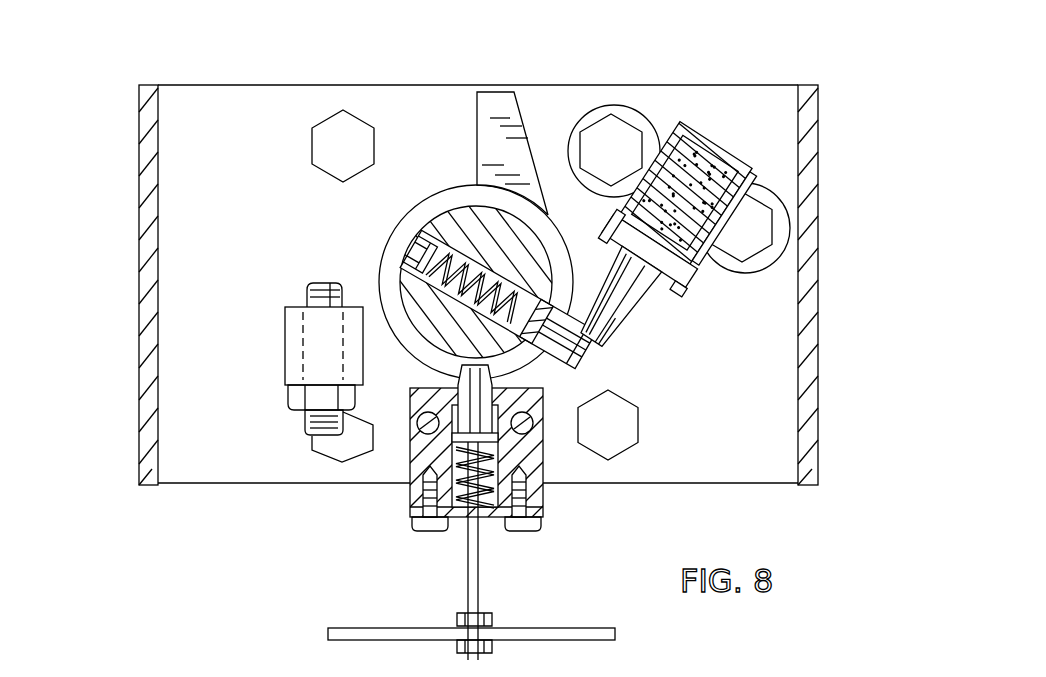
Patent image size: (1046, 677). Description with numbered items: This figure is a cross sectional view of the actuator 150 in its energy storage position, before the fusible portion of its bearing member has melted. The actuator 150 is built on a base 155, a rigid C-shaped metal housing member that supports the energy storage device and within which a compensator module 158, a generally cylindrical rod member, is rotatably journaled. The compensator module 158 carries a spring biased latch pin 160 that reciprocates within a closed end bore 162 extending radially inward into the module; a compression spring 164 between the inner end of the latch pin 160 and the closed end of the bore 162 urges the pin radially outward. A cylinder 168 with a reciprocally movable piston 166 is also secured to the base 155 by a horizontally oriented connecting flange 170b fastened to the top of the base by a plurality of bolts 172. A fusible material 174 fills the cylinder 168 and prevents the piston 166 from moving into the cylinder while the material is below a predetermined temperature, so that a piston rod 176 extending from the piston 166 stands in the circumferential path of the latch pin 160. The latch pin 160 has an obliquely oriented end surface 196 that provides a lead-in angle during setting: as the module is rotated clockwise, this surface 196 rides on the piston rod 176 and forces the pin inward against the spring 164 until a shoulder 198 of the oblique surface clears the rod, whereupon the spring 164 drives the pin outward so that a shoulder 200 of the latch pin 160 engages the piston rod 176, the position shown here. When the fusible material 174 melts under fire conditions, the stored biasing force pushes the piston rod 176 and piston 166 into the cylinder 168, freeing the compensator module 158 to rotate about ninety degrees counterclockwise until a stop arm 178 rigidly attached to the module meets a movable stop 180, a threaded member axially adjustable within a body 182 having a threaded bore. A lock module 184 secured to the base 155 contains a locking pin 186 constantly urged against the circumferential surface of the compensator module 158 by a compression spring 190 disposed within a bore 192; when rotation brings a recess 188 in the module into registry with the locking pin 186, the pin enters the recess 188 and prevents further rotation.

The actuator 150 is at (779, 69).
The base 155 is at (754, 447).
The compensator module 158 is at (432, 238).
The latch pin 160 is at (552, 238).
The closed end bore 162 is at (522, 280).
The compression spring 164 is at (517, 277).
The piston 166 is at (706, 274).
The cylinder 168 is at (748, 192).
The connecting flange 170b is at (658, 124).
The bolts 172 is at (614, 118).
The fusible material 174 is at (714, 178).
The piston rod 176 is at (612, 331).
The stop arm 178 is at (492, 97).
The movable stop 180 is at (308, 286).
The body 182 is at (284, 343).
The lock module 184 is at (420, 456).
The locking pin 186 is at (470, 384).
The recess 188 is at (408, 276).
The compression spring 190 is at (508, 488).
The bore 192 is at (456, 486).
The obliquely oriented end surface 196 is at (580, 366).
The shoulder 198 is at (602, 343).
The shoulder 200 is at (620, 310).